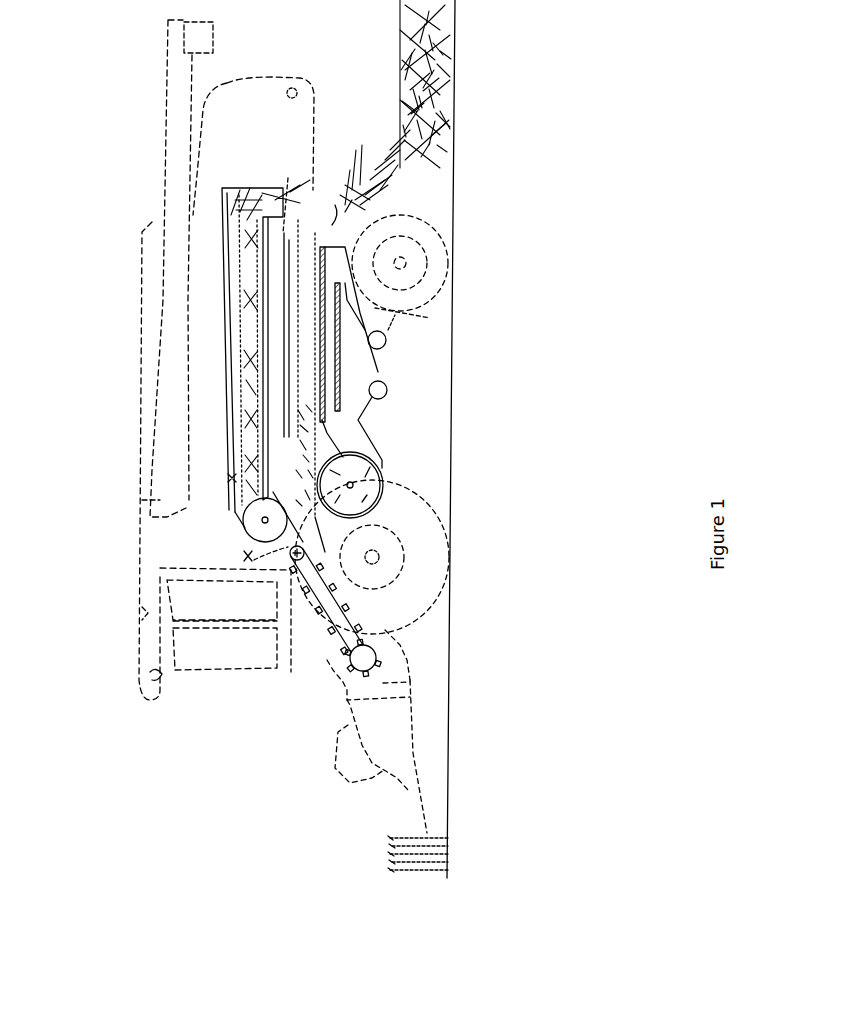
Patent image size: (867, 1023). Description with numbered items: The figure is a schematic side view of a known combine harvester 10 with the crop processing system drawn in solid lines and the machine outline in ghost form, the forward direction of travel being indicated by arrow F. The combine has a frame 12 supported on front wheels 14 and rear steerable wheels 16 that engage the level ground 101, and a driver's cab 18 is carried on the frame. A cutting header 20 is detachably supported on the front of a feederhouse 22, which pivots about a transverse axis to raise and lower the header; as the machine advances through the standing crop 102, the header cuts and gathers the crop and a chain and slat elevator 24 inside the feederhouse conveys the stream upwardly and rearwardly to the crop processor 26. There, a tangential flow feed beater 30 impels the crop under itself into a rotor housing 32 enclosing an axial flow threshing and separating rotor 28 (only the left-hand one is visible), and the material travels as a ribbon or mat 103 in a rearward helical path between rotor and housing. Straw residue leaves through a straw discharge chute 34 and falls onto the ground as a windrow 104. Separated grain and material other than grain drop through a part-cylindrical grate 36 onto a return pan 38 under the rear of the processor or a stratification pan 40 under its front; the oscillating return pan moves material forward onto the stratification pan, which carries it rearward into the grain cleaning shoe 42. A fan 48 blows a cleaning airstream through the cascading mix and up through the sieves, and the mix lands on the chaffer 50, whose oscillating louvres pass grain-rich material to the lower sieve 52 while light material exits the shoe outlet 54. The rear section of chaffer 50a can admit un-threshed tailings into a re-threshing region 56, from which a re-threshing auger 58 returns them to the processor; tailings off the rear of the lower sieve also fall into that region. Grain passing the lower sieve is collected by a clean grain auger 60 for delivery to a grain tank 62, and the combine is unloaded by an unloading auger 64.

The combine harvester 10 is at (92, 683).
The frame 12 is at (387, 427).
The front wheels 14 is at (432, 606).
The rear steerable wheels 16 is at (444, 230).
The driver's cab 18 is at (140, 620).
The cutting header 20 is at (314, 769).
The feederhouse 22 is at (325, 648).
The elevator 24 is at (392, 655).
The crop processor 26 is at (229, 478).
The axial flow threshing and separating rotor 28 is at (230, 367).
The feed beater 30 is at (243, 523).
The rotor housing 32 is at (230, 420).
The straw discharge chute 34 is at (262, 198).
The part-cylindrical grate 36 is at (300, 375).
The return pan 38 is at (288, 278).
The stratification pan 40 is at (340, 512).
The grain cleaning shoe 42 is at (387, 364).
The fan 48 is at (382, 463).
The chaffer 50 is at (320, 333).
The rear section of chaffer 50a is at (317, 343).
The lower sieve 52 is at (358, 357).
The shoe outlet 54 is at (350, 211).
The re-threshing region 56 is at (424, 300).
The re-threshing auger 58 is at (387, 343).
The clean grain auger 60 is at (389, 390).
The grain tank 62 is at (140, 430).
The unloading auger 64 is at (166, 130).
The ground 101 is at (450, 768).
The standing crop 102 is at (388, 842).
The mat 103 is at (229, 300).
The windrow 104 is at (402, 68).